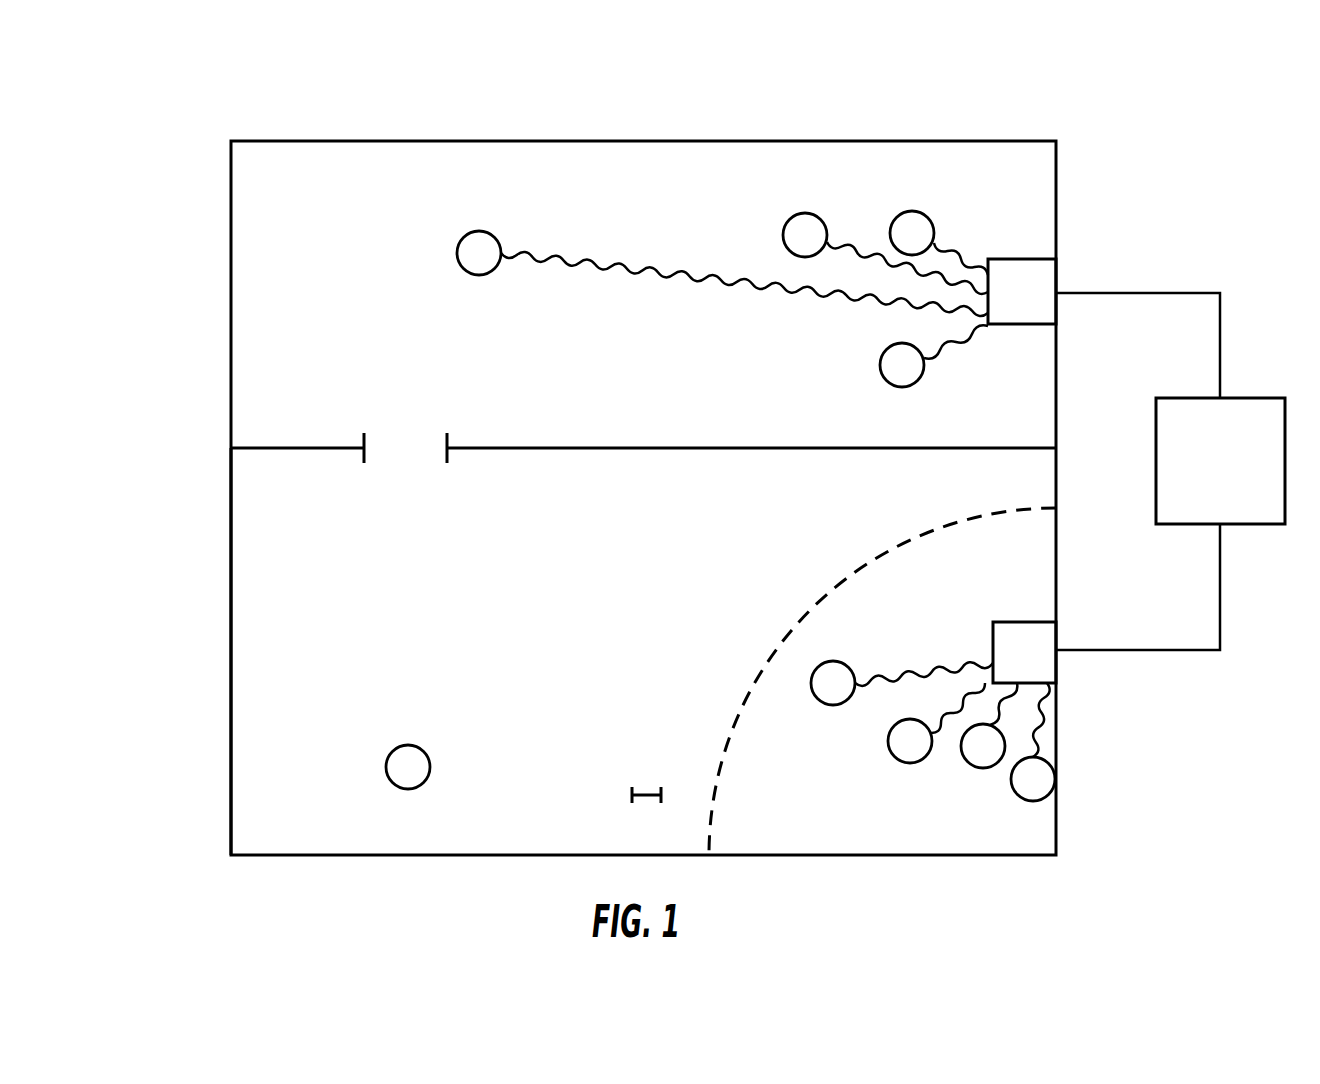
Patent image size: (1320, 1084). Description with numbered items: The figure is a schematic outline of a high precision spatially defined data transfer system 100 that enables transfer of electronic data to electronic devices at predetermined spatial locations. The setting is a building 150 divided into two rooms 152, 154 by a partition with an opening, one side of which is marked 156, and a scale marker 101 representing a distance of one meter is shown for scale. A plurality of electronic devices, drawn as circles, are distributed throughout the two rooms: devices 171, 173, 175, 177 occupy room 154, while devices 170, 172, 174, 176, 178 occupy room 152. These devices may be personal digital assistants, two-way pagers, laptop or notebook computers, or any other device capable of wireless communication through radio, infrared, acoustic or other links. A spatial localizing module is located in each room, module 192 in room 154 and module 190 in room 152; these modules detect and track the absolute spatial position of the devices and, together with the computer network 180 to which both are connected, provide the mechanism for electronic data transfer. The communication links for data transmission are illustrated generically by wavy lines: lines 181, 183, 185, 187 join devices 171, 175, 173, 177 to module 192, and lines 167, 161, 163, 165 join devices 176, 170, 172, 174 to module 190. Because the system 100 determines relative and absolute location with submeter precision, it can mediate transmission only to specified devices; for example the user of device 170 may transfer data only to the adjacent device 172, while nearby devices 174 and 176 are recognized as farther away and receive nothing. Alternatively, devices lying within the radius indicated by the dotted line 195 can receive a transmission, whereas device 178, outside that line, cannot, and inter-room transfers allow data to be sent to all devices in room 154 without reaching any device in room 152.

The system 100 is at (1112, 146).
The scale marker 101 is at (647, 793).
The building 150 is at (408, 140).
The room 152 is at (264, 568).
The room 154 is at (523, 170).
The wall opening / partition 156 is at (782, 158).
The wavy line 161 is at (950, 713).
The wavy line 163 is at (1002, 707).
The wavy line 165 is at (1037, 713).
The wavy line 167 is at (950, 663).
The electronic device 170 is at (896, 752).
The electronic device 171 is at (465, 264).
The electronic device 172 is at (969, 757).
The electronic device 173 is at (898, 244).
The electronic device 174 is at (1019, 790).
The electronic device 175 is at (791, 246).
The electronic device 176 is at (819, 694).
The electronic device 177 is at (888, 376).
The electronic device 178 is at (394, 778).
The computer network 180 is at (1205, 472).
The wavy line 181 is at (720, 277).
The wavy line 183 is at (875, 252).
The wavy line 185 is at (963, 258).
The signal path from tag 177 187 is at (968, 338).
The spatial localizing module 190 is at (1033, 622).
The spatial localizing module 192 is at (1042, 259).
The dotted line 195 is at (838, 588).